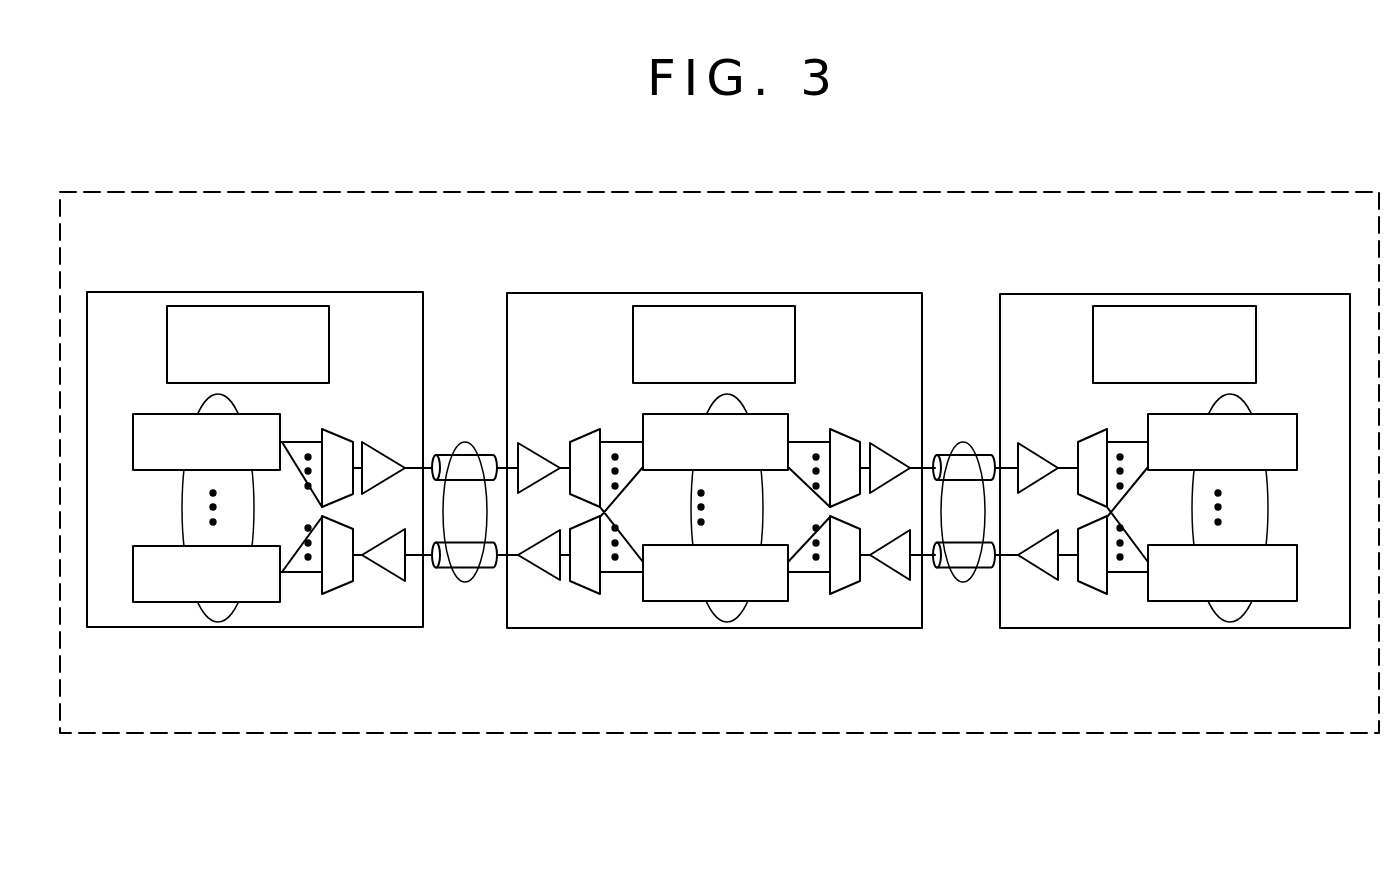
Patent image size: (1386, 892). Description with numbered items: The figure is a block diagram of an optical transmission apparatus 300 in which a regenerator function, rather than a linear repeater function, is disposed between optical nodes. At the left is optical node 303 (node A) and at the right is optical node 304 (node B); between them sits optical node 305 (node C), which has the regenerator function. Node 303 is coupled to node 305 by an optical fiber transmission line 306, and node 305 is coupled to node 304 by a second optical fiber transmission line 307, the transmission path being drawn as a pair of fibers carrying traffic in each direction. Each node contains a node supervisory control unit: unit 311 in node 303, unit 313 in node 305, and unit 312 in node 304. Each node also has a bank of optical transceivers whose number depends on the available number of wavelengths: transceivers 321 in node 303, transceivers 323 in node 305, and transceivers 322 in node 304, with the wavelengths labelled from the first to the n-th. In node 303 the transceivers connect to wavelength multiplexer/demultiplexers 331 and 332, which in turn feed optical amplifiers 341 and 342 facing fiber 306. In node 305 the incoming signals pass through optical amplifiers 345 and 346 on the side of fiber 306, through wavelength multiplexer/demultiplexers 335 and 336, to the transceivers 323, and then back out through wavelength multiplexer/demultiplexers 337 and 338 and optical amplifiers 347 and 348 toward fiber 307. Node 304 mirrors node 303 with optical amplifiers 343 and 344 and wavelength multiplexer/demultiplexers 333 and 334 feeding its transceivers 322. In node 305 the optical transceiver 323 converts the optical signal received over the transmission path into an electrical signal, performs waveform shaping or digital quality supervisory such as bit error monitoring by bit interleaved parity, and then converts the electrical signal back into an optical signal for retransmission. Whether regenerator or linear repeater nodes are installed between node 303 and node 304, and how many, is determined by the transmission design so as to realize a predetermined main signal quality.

The optical transmission system 300 is at (987, 733).
The optical node 303 is at (268, 627).
The optical node 304 is at (1307, 628).
The optical node 305 is at (643, 628).
The optical fiber transmission line 306 is at (465, 582).
The optical fiber transmission line 307 is at (963, 582).
The node supervisory control unit 311 is at (246, 306).
The node supervisory control unit 312 is at (1158, 306).
The node supervisory control unit 313 is at (700, 306).
The optical transceivers 321 is at (203, 622).
The optical transceivers 322 is at (1207, 618).
The optical transceivers 323 is at (693, 615).
The optical multiplexer 331 is at (340, 436).
The optical demultiplexer 332 is at (336, 578).
The optical demultiplexer 333 is at (1092, 447).
The optical multiplexer 334 is at (1093, 575).
The wavelength multiplexer/demultiplexer 335 is at (587, 440).
The wavelength multiplexer/demultiplexer 336 is at (590, 577).
The wavelength multiplexer/demultiplexer 337 is at (843, 430).
The wavelength multiplexer/demultiplexer 338 is at (840, 595).
The optical amplifier 341 is at (394, 456).
The optical amplifier 342 is at (395, 560).
The optical amplifier 343 is at (1003, 447).
The optical amplifier 344 is at (1040, 570).
The optical amplifier 345 is at (533, 447).
The optical amplifier 346 is at (540, 568).
The optical amplifier 347 is at (888, 452).
The optical amplifier 348 is at (897, 580).